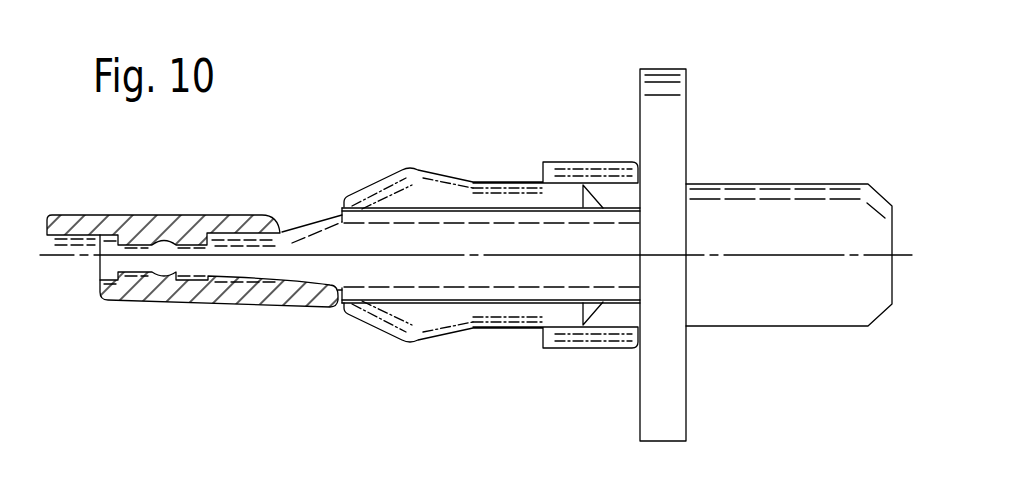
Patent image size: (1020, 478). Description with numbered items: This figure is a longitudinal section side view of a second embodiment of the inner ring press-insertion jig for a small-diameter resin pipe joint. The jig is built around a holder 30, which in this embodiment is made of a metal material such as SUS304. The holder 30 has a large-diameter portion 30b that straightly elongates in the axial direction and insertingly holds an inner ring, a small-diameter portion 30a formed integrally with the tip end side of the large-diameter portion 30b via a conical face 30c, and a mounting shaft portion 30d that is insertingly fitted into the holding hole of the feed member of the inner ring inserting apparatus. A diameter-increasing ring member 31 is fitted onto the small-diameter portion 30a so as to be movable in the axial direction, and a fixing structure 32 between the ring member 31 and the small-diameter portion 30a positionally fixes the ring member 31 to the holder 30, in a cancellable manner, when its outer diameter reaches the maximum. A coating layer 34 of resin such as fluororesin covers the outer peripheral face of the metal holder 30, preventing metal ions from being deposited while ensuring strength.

The holder 30 is at (480, 283).
The small-diameter portion 30a is at (228, 243).
The large-diameter portion 30b is at (452, 222).
The conical face 30c is at (318, 222).
The mounting shaft portion 30d is at (773, 188).
The diameter-increasing ring member 31 is at (93, 215).
The fixing structure 32 is at (143, 302).
The coating layer 34 is at (398, 302).